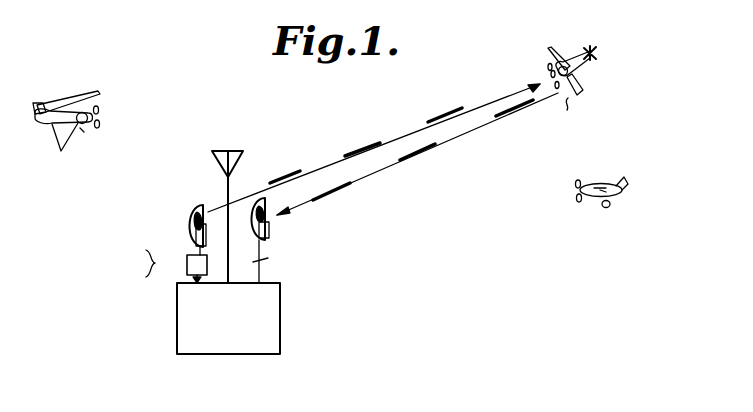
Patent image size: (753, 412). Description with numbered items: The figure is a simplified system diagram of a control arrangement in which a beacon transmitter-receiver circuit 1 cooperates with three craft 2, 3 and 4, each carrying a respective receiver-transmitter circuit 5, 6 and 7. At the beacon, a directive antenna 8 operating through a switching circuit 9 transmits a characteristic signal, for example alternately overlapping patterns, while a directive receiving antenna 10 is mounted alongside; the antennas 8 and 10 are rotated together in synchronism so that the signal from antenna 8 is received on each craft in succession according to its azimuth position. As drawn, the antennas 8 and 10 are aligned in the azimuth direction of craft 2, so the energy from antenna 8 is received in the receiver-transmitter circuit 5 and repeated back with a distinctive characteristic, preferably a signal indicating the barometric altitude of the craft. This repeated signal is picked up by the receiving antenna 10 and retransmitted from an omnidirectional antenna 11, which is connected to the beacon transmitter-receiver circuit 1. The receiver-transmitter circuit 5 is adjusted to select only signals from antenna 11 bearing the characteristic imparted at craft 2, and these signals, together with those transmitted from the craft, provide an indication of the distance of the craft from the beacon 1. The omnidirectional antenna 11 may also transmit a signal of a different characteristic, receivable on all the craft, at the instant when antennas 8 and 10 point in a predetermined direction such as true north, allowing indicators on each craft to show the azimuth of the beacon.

The beacon transmitter-receiver circuit 1 is at (280, 298).
The craft 2 is at (565, 56).
The craft 3 is at (601, 184).
The craft 4 is at (47, 133).
The receiver-transmitter circuit 5 is at (604, 125).
The receiver-transmitter circuit 6 is at (603, 206).
The receiver-transmitter circuit 7 is at (84, 132).
The directive antenna 8 is at (197, 205).
The switching circuit 9 is at (187, 264).
The directive receiving antenna 10 is at (270, 232).
The omnidirectional antenna 11 is at (243, 162).